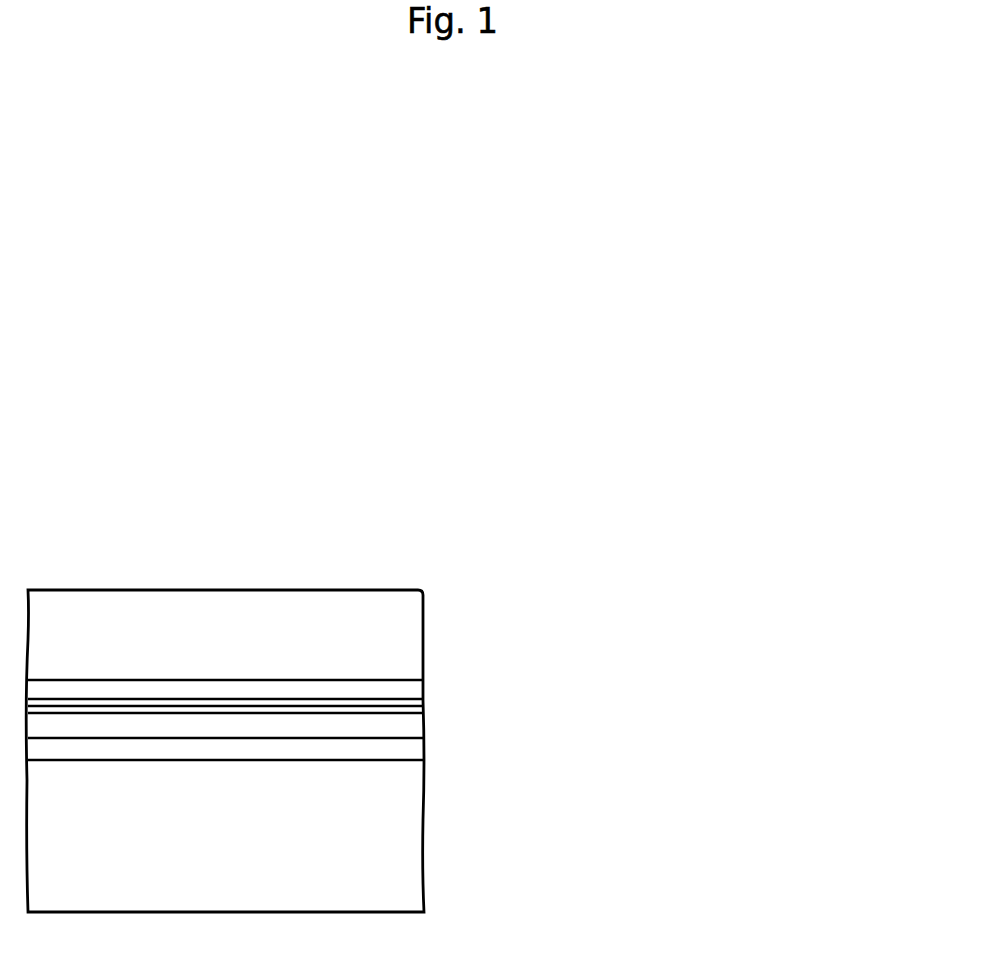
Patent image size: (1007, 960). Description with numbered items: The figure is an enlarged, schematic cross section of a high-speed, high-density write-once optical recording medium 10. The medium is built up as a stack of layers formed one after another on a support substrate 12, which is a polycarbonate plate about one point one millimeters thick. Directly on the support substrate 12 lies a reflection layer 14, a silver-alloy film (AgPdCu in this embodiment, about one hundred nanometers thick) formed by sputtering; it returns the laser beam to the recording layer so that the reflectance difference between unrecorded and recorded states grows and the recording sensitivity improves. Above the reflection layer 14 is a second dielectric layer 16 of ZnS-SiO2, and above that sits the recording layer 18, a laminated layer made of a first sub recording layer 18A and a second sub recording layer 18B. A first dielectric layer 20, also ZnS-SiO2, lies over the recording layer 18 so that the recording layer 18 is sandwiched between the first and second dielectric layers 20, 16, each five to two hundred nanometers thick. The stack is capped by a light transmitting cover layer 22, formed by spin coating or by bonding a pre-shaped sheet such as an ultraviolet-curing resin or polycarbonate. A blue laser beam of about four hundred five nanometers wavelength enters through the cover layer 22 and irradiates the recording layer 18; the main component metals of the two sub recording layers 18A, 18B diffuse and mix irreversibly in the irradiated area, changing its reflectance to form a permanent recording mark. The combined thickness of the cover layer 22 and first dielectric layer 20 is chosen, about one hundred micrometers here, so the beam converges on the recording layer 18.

The optical recording medium 10 is at (433, 566).
The support substrate 12 is at (412, 855).
The reflection layer 14 is at (412, 757).
The second dielectric layer 16 is at (408, 745).
The recording layer 18 is at (842, 683).
The first sub recording layer 18A is at (423, 706).
The second sub recording layer 18B is at (413, 721).
The first dielectric layer 20 is at (410, 688).
The light transmitting cover layer 22 is at (415, 625).